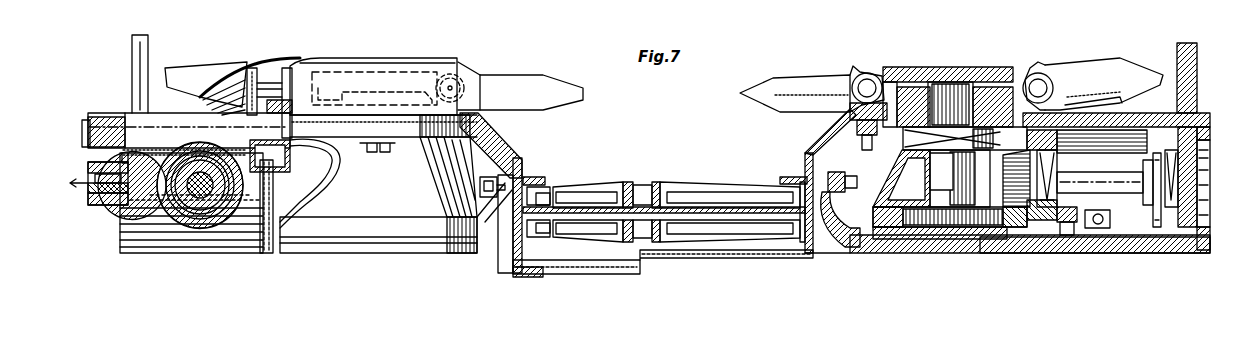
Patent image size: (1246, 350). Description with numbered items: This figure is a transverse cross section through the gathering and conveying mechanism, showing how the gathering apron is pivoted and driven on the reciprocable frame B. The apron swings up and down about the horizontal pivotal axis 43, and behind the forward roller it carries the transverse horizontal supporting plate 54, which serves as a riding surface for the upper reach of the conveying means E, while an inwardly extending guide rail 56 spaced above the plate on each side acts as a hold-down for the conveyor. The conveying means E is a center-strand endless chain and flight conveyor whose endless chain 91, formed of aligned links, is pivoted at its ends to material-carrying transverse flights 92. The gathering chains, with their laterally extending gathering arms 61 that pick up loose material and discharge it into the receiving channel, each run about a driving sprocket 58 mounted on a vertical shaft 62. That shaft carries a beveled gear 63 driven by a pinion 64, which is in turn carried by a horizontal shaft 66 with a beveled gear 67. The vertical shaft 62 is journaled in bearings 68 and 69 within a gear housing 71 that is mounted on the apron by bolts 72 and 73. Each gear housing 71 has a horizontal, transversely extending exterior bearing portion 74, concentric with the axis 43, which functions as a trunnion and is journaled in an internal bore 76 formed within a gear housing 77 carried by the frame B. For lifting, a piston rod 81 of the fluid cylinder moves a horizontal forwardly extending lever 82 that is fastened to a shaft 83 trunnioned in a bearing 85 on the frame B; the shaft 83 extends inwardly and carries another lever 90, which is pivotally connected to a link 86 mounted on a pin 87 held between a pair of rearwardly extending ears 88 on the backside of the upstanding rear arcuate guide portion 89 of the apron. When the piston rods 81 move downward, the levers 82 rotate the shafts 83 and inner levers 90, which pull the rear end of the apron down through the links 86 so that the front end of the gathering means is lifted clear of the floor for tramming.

The pivotal axis 43 is at (69, 188).
The transverse horizontal supporting plate 54 is at (773, 212).
The guide rail 56 is at (534, 177).
The driving sprocket 58 is at (418, 103).
The gathering arm 61 is at (216, 66).
The vertical shaft 62 is at (910, 253).
The beveled gear 63 is at (950, 228).
The pinion 64 is at (1004, 178).
The horizontal shaft 66 is at (1108, 180).
The beveled gear 67 is at (1145, 207).
The bearing 68 is at (898, 173).
The bearing 69 is at (978, 240).
The gear housing 71 is at (428, 235).
The bolt 72 is at (868, 150).
The bolt 73 is at (484, 180).
The exterior bearing portion 74 is at (1073, 240).
The internal bearing or bore 76 is at (1100, 240).
The gear housing 77 is at (1148, 253).
The piston rod 81 is at (107, 206).
The lever 82 is at (107, 137).
The shaft 83 is at (85, 127).
The bearing 85 is at (175, 127).
The link 86 is at (272, 145).
The pin 87 is at (283, 104).
The ear 88 is at (262, 72).
The rear arcuate guide portion 89 is at (418, 62).
The lever 90 is at (286, 170).
The endless chain 91 is at (655, 183).
The transverse flight 92 is at (728, 165).
The conveying means E is at (686, 183).
The reciprocable frame B is at (1177, 50).